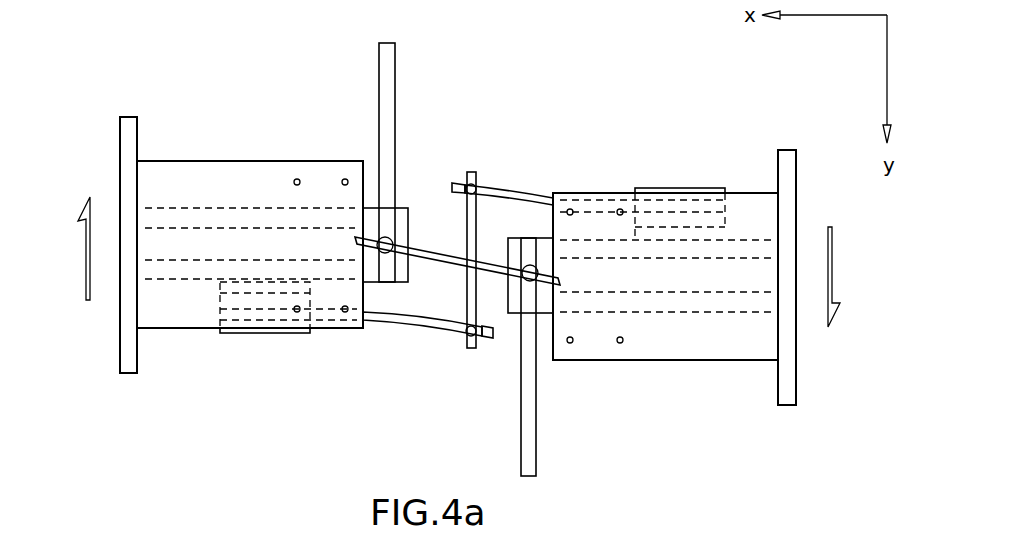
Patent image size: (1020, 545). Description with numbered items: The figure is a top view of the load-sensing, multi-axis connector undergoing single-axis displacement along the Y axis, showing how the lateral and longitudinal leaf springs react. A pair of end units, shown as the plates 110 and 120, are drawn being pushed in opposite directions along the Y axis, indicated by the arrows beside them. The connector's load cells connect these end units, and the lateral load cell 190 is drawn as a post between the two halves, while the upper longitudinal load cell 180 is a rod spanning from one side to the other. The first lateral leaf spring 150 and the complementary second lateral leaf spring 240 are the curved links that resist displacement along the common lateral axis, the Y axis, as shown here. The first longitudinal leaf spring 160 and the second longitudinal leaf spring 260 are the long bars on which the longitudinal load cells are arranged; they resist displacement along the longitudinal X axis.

The first plate 110 is at (121, 318).
The second plate 120 is at (797, 360).
The first lateral leaf spring 150 is at (425, 327).
The first longitudinal leaf spring 160 is at (380, 102).
The upper longitudinal load cell 180 is at (438, 243).
The lateral load cell 190 is at (476, 168).
The second lateral leaf spring 240 is at (520, 193).
The second longitudinal leaf spring 260 is at (535, 415).